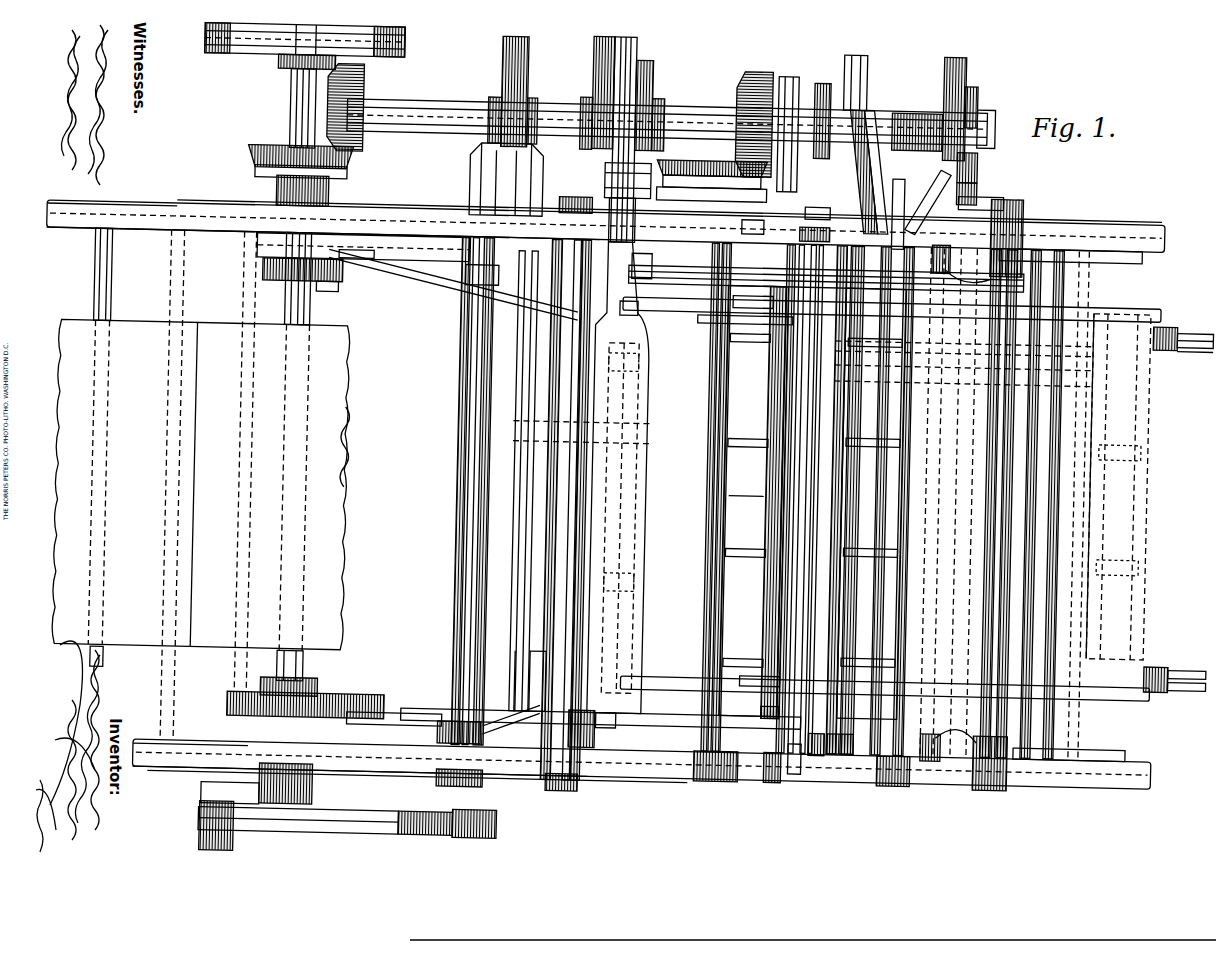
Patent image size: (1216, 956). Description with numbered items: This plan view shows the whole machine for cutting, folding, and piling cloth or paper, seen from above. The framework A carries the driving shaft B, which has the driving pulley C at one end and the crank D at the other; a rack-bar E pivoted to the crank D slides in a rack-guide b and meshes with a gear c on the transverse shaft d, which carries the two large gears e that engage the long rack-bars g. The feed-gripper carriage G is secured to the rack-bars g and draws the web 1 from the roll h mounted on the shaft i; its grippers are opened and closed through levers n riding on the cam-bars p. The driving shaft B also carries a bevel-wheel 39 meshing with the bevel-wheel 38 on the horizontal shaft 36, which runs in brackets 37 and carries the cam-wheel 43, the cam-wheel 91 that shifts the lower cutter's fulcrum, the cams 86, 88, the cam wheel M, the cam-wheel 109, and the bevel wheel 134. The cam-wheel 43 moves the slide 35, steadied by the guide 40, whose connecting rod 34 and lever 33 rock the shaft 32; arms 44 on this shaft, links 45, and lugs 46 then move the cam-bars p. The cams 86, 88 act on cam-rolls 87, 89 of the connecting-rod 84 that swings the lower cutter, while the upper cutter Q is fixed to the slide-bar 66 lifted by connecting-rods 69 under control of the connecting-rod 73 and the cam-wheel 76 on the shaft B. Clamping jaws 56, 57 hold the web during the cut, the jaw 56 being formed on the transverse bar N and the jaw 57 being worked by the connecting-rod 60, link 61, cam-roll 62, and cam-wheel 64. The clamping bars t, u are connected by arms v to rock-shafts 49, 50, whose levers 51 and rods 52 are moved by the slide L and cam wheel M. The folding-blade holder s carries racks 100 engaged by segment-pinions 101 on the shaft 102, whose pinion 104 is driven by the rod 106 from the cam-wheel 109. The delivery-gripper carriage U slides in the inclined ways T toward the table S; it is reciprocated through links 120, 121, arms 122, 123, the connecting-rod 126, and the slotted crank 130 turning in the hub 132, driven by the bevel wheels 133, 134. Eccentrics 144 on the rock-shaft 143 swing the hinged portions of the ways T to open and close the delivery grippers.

The framework A is at (1080, 207).
The large gears e is at (424, 222).
The rack-bars g is at (222, 227).
The cam-bar p is at (1128, 239).
The inclined ways T is at (1140, 284).
The driving pulley C is at (250, 50).
The driving shaft B is at (290, 97).
The bevel-wheel 38 is at (362, 72).
The bevel-wheel 39 is at (272, 142).
The cam-wheel 64 is at (282, 275).
The cam-roll 62 is at (331, 294).
The link 61 is at (362, 252).
The connecting-rod 60 is at (432, 278).
The horizontal shaft 36 is at (460, 92).
The brackets 37 is at (428, 128).
The cam-wheel 91 is at (499, 56).
The cam-roll 89 is at (611, 40).
The cam 88 is at (590, 72).
The cam 86 is at (651, 80).
The cam-roll 87 is at (629, 182).
The connecting-rod 84 is at (632, 220).
The short connecting-rods 69 is at (576, 185).
The bevel wheel 133 is at (704, 146).
The bevel wheel 134 is at (748, 72).
The cam wheel M is at (788, 60).
The vertical slide L is at (820, 66).
The cam-wheel 109 is at (858, 72).
The rod 106 is at (858, 100).
The pinion 104 is at (872, 110).
The cam-wheel 43 is at (963, 56).
The vertical slide 35 is at (976, 140).
The connecting rod 34 is at (976, 166).
The lever 33 is at (984, 176).
The arms 44 is at (1010, 255).
The guide 40 is at (928, 202).
The movable clamping jaw 57 is at (518, 501).
The arm 51 is at (753, 236).
The rods 52 is at (818, 205).
The racks 100 is at (826, 790).
The segment-pinions 101 is at (835, 740).
The lugs 46 is at (946, 225).
The links 45 is at (962, 258).
The arm 123 is at (1192, 312).
The link 121 is at (1191, 364).
The link 120 is at (1188, 645).
The arm 122 is at (1190, 665).
The shaft i is at (113, 280).
The roll h is at (201, 485).
The web 1 is at (350, 470).
The transverse shaft d is at (463, 586).
The stationary clamping jaw 56 is at (533, 540).
The slide-bar 66 is at (572, 509).
The upper cutter Q is at (578, 494).
The transverse bar N is at (540, 686).
The feed-gripper carriage G is at (652, 484).
The hub 132 is at (656, 246).
The arm n is at (642, 294).
The crank 130 is at (692, 300).
The connecting-rod 126 is at (790, 350).
The eccentrics 144 is at (756, 498).
The rock-shaft 143 is at (772, 696).
The rock-shaft 49 is at (713, 447).
The arms v is at (866, 650).
The frame s is at (808, 438).
The clamping bar t is at (770, 488).
The clamping bar u is at (808, 504).
The rock-shaft 50 is at (898, 457).
The transverse shaft 102 is at (882, 576).
The rock-shaft 32 is at (1004, 455).
The table S is at (1055, 504).
The delivery-gripper carriage U is at (1150, 448).
The cam-wheel 76 is at (332, 690).
The connecting-rod 73 is at (398, 705).
The crank D is at (214, 787).
The rack-bar E is at (302, 820).
The rack-guide b is at (412, 808).
The gear c is at (510, 815).